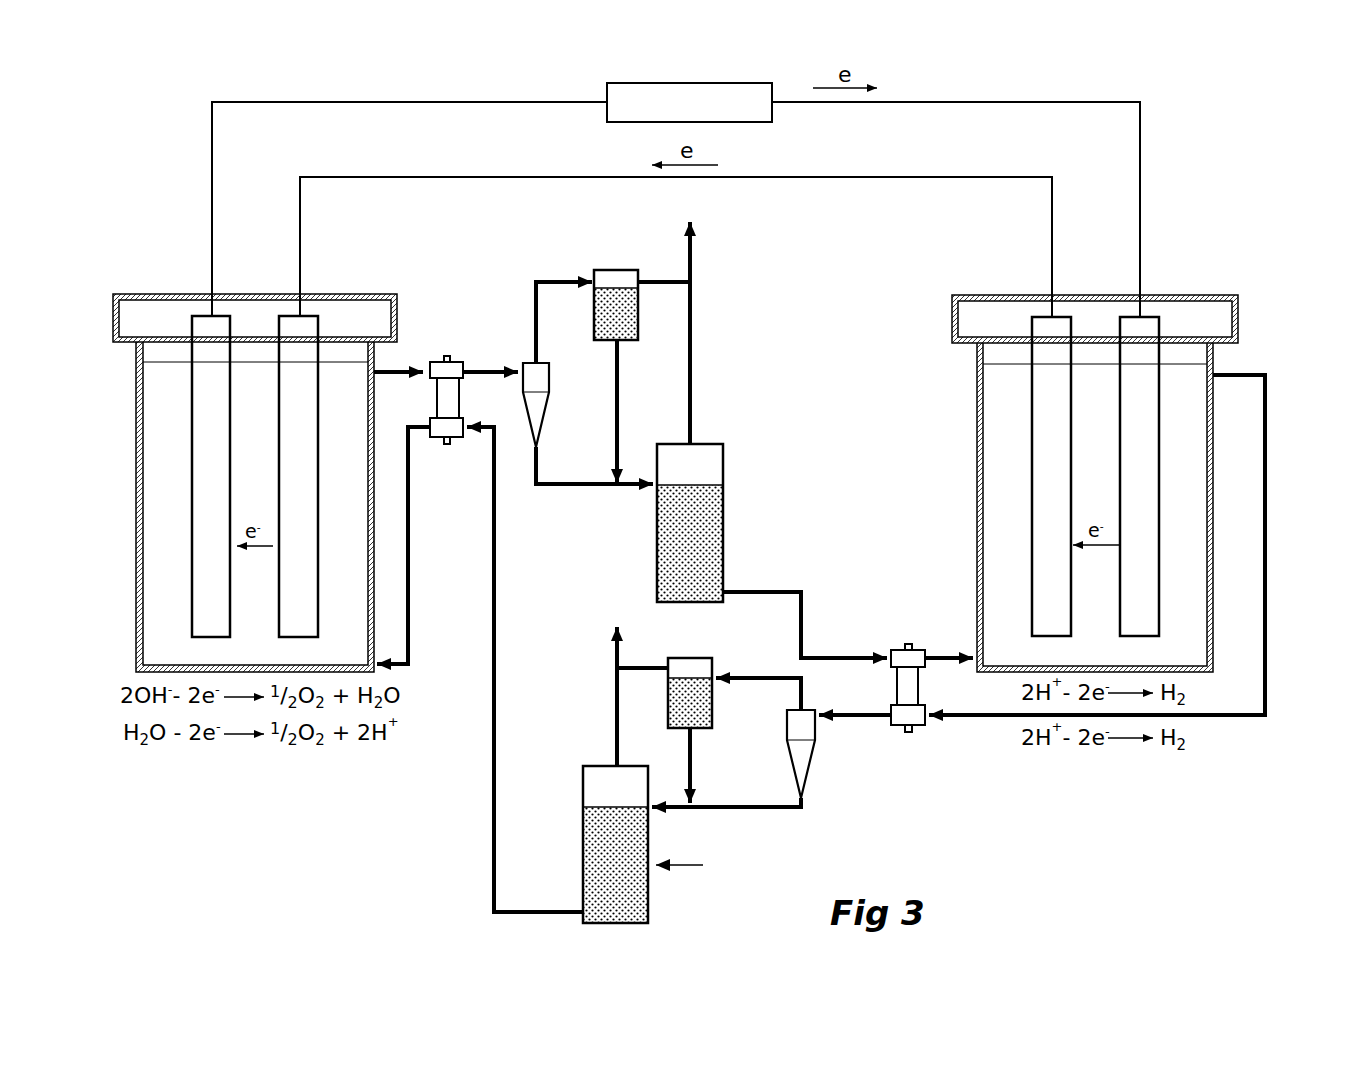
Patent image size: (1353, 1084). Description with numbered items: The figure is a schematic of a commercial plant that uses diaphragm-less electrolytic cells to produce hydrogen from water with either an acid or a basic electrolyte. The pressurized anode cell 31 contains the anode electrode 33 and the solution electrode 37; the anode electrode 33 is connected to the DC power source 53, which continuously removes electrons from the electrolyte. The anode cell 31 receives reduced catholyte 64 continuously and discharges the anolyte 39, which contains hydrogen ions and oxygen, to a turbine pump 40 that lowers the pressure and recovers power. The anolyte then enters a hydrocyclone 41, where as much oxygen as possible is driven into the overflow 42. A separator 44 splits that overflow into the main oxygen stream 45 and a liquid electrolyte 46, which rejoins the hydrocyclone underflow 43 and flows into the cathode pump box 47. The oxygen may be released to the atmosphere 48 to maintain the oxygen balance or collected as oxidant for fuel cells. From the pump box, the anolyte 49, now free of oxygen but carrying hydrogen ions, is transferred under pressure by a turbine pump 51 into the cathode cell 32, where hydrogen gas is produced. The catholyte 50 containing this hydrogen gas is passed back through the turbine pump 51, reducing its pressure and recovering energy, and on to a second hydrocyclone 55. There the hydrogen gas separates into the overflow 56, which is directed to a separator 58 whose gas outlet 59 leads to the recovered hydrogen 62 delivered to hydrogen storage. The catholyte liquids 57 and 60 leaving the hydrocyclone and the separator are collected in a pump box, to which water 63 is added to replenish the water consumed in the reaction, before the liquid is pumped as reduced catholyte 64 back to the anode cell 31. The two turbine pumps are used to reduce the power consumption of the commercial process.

The anode cell 31 is at (345, 296).
The cathode cell 32 is at (970, 295).
The anode electrode 33 is at (208, 538).
The solution electrode 37 is at (320, 557).
The anolyte 39 is at (393, 373).
The turbine pump 40 is at (447, 362).
The hydrocyclone 41 is at (545, 382).
The overflow 42 is at (560, 281).
The hydrocyclone underflow 43 is at (560, 485).
The separator 44 is at (640, 322).
The main oxygen stream 45 is at (660, 281).
The electrolyte 46 is at (617, 418).
The cathode pump box 47 is at (723, 535).
The atmosphere release 48 is at (691, 258).
The anolyte without oxygen 49 is at (840, 656).
The catholyte 50 is at (1265, 372).
The turbine pump 51 is at (918, 715).
The DC power source 53 is at (772, 110).
The hydrocyclone 55 is at (805, 750).
The overflow 56 is at (740, 676).
The catholyte liquid 57 is at (738, 810).
The separator 58 is at (680, 708).
The outlet pipe 59 is at (645, 667).
The catholyte liquid 60 is at (692, 755).
The hydrogen 62 is at (617, 745).
The water 63 is at (703, 865).
The reduced catholyte 64 is at (494, 655).